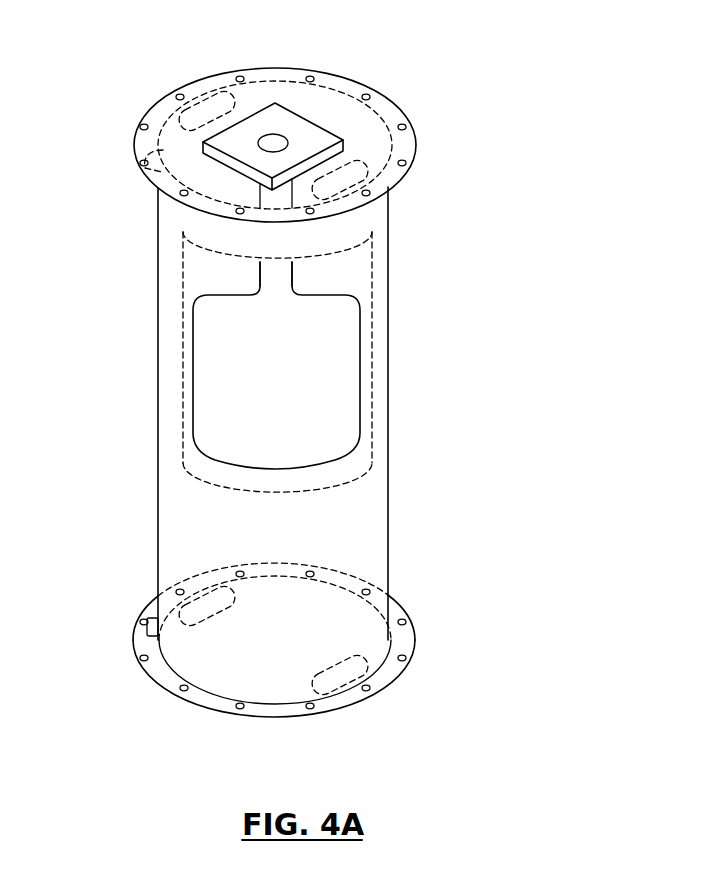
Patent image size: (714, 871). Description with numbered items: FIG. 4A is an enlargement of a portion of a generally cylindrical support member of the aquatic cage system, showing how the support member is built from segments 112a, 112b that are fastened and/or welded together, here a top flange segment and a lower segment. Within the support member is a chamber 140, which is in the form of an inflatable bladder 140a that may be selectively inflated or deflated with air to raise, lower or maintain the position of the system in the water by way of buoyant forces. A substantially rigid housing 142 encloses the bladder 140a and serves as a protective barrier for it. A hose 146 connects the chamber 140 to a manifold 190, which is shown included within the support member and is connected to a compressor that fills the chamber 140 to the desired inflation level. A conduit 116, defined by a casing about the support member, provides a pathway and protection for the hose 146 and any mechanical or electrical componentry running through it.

The segment 112a is at (415, 145).
The segment 112b is at (407, 640).
The conduit 116 is at (191, 161).
The manifold 190 is at (300, 132).
The chamber 140 is at (196, 280).
The inflatable bladder 140a is at (337, 388).
The housing 142 is at (183, 400).
The hose 146 is at (292, 278).